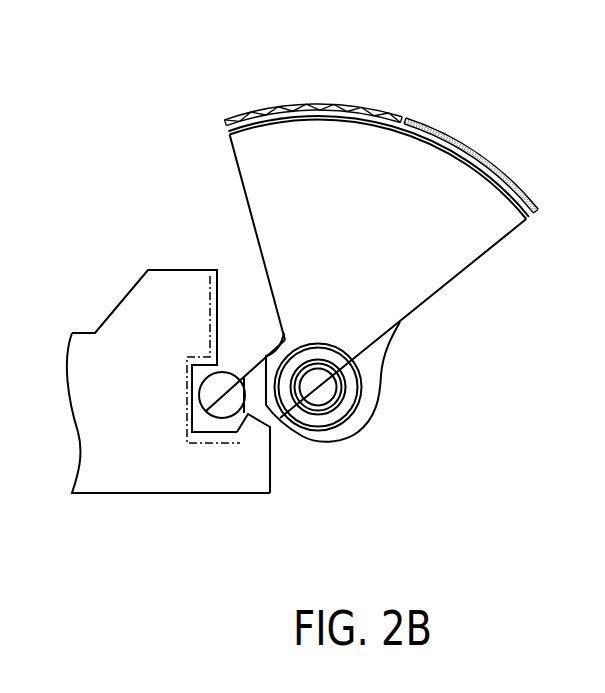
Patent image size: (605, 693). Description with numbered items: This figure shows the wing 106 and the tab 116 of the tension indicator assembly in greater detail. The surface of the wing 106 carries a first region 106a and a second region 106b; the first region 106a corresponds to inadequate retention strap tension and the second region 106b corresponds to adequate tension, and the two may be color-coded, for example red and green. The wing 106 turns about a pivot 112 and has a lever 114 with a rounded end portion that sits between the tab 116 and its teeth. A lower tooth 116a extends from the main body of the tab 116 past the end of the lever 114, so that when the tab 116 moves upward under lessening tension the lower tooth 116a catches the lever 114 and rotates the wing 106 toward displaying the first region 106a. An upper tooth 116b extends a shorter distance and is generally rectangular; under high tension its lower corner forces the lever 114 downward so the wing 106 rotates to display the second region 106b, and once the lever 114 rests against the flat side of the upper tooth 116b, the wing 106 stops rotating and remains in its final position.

The wing 106 is at (386, 223).
The first region 106a is at (308, 103).
The second region 106b is at (498, 170).
The pivot 112 is at (306, 379).
The lever 114 is at (212, 408).
The tab 116 is at (86, 397).
The lower tooth 116a is at (232, 440).
The upper tooth 116b is at (206, 334).